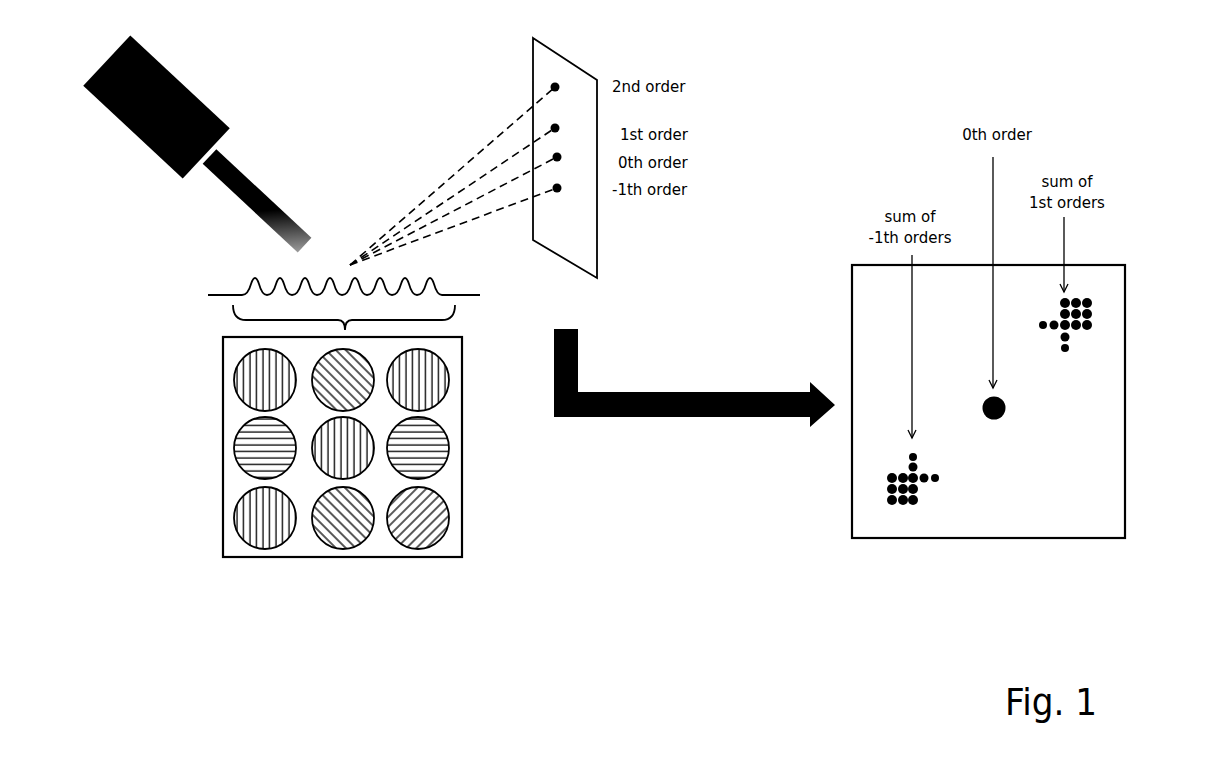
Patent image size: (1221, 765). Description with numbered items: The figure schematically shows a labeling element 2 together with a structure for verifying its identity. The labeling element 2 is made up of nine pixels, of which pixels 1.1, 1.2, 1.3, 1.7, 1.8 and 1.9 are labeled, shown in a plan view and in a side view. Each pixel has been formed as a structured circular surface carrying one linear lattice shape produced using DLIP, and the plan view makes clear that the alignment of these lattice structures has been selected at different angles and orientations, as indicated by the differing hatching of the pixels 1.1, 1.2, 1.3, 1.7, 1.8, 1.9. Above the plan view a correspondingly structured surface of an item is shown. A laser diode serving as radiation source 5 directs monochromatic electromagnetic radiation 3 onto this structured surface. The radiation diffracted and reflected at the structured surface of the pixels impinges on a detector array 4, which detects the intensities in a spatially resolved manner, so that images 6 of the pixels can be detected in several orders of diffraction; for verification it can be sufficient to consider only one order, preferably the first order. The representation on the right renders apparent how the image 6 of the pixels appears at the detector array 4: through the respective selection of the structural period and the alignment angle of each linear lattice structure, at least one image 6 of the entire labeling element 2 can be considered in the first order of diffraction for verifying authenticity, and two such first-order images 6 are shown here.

The pixel 1.1 is at (230, 373).
The pixel 1.2 is at (230, 447).
The pixel 1.3 is at (230, 525).
The pixel 1.7 is at (450, 380).
The pixel 1.8 is at (450, 450).
The pixel 1.9 is at (450, 520).
The labeling element 2 is at (215, 410).
The monochromatic electromagnetic radiation 3 is at (268, 200).
The detector array 4 is at (542, 60).
The radiation source 5 is at (180, 77).
The image 6 is at (562, 126).